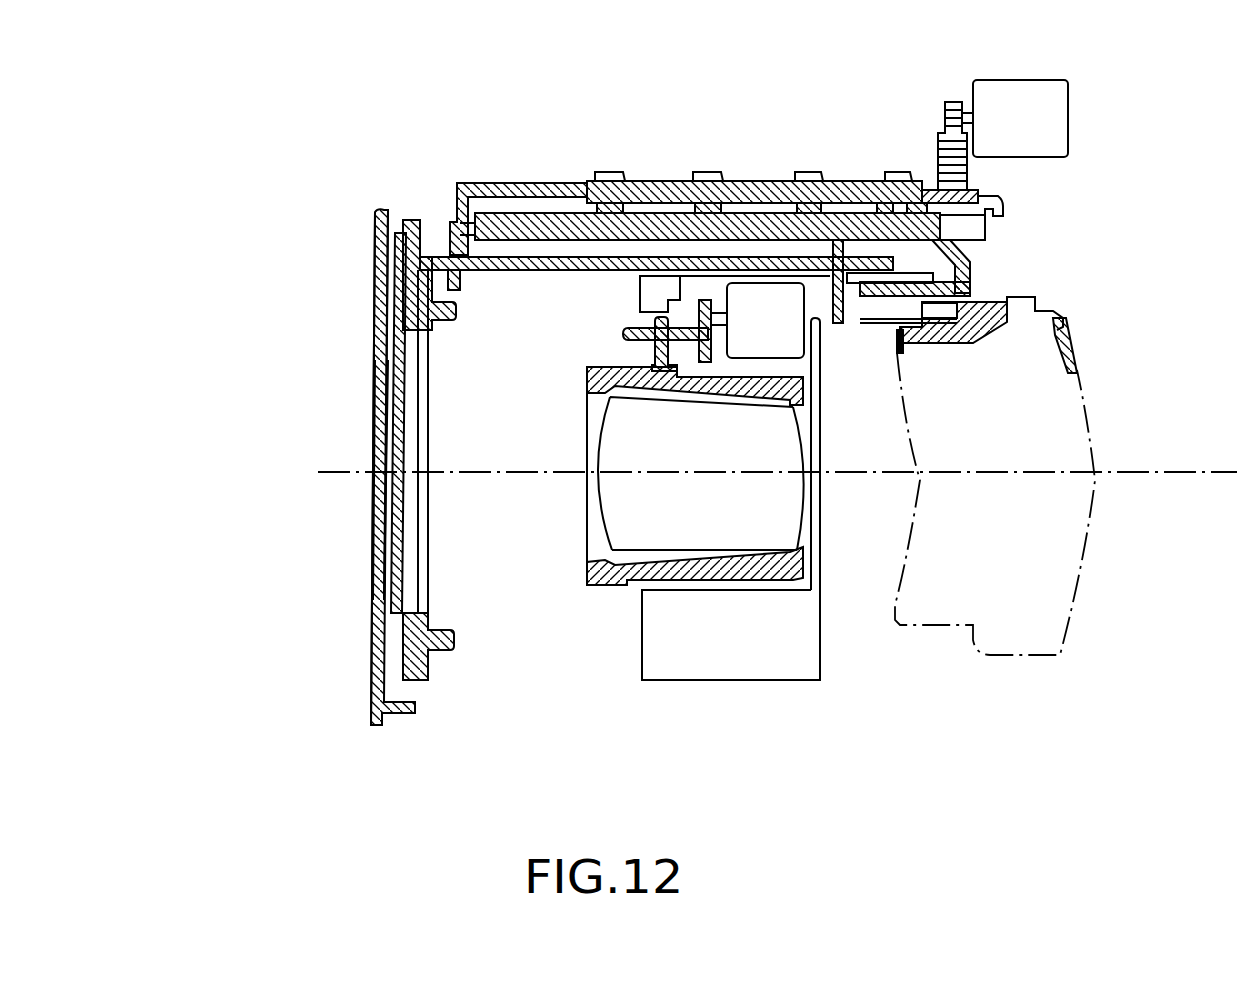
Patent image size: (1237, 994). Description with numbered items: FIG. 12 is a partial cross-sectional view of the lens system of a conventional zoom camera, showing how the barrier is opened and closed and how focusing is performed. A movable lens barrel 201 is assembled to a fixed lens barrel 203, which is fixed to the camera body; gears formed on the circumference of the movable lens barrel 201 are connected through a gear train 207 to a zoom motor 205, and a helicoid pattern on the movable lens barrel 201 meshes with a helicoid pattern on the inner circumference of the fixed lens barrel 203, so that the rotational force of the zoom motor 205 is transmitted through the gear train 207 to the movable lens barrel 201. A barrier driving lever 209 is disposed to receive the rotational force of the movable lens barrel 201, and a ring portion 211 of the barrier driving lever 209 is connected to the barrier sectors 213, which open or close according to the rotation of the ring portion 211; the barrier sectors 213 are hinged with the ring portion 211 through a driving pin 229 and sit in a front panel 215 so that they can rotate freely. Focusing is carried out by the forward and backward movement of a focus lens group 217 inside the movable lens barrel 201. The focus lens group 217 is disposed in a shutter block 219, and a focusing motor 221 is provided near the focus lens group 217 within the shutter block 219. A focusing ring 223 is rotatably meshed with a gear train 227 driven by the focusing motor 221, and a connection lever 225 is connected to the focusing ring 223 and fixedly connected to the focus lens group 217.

The movable lens barrel 201 is at (596, 181).
The fixed lens barrel 203 is at (557, 183).
The zoom motor 205 is at (1068, 110).
The gear train 207 is at (927, 122).
The barrier driving lever 209 is at (513, 262).
The ring portion 211 is at (427, 665).
The barrier sectors 213 is at (395, 545).
The front plate 215 is at (370, 684).
The focus lens group 217 is at (593, 587).
The shutter block 219 is at (757, 672).
The focusing motor 221 is at (795, 340).
The focusing ring 223 is at (680, 328).
The connection lever 225 is at (652, 345).
The gear train 227 is at (709, 303).
The driving pin 229 is at (377, 258).